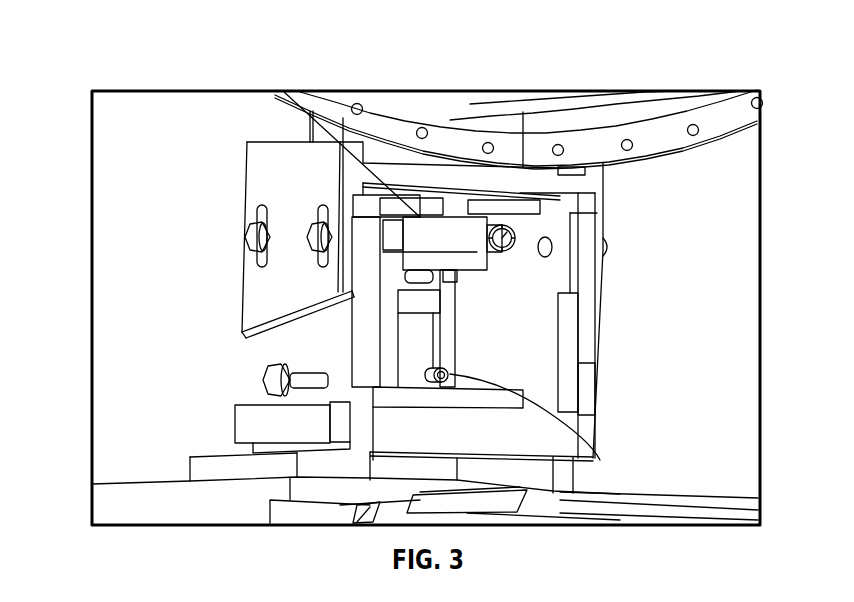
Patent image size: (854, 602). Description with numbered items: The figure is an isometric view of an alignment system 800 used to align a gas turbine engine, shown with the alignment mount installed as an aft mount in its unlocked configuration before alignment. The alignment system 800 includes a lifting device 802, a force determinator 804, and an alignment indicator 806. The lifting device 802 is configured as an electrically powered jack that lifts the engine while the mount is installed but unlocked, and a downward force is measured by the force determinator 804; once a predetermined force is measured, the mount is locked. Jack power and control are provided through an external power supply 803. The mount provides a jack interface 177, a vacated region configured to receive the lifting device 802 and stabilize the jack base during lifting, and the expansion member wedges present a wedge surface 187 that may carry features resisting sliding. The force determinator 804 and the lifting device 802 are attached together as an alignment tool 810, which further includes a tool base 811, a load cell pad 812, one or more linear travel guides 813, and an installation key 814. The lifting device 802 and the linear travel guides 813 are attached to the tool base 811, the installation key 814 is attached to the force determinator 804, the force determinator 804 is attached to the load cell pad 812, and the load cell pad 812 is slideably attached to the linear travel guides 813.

The alignment system 800 is at (114, 50).
The jack interface 177 is at (350, 153).
The installation key 814 is at (372, 183).
The force determinator 804 is at (513, 228).
The alignment indicator 806 is at (507, 255).
The load cell pad 812 is at (466, 258).
The linear travel guides 813 is at (458, 325).
The alignment tool 810 is at (456, 346).
The lifting device 802 is at (433, 377).
The tool base 811 is at (403, 393).
The power supply 803 is at (600, 460).
The wedge surface 187 is at (272, 325).